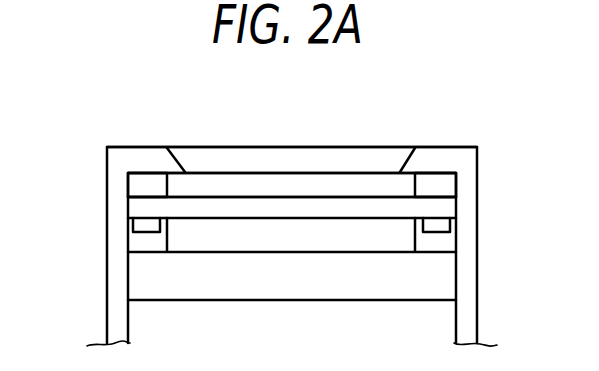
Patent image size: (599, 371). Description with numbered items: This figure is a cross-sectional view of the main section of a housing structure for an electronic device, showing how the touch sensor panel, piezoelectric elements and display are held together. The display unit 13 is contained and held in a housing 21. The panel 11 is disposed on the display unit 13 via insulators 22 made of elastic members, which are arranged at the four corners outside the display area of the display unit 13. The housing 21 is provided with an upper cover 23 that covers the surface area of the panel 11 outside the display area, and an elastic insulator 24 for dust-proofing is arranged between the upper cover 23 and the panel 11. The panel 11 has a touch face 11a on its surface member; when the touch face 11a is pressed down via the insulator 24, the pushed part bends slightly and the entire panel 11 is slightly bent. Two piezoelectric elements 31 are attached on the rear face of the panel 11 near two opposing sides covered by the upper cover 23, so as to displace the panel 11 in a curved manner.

The panel 11 is at (135, 205).
The touch face 11a is at (205, 197).
The display unit 13 is at (295, 283).
The housing 21 is at (468, 293).
The insulators 22 is at (127, 245).
The upper cover 23 is at (430, 158).
The insulator 24 is at (438, 185).
The piezoelectric elements 31 is at (127, 223).